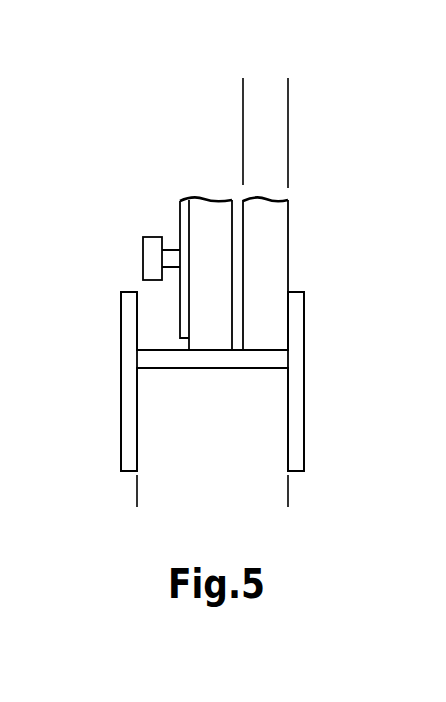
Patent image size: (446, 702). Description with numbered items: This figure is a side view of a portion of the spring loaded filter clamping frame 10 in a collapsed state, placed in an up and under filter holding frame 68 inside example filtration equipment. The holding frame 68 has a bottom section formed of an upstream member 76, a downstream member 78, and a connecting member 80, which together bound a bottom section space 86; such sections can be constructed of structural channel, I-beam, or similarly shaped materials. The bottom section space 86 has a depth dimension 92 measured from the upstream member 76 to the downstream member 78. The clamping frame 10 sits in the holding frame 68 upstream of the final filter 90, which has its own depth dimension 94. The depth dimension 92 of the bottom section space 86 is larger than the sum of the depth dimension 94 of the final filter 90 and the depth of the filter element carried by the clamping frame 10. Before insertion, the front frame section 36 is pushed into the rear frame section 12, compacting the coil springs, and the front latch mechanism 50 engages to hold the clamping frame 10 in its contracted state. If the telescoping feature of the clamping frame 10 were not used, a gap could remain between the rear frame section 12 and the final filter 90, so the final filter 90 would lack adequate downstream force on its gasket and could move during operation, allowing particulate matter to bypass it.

The spring loaded filter clamping frame 10 is at (189, 124).
The rear frame section 12 is at (228, 198).
The front frame section 36 is at (182, 213).
The front latch mechanism 50 is at (174, 248).
The up and under filter holding frame 68 is at (128, 442).
The upstream member 76 is at (121, 325).
The downstream member 78 is at (305, 323).
The connecting member 80 is at (252, 368).
The bottom section space 86 is at (157, 338).
The final filter 90 is at (267, 200).
The depth dimension 92 is at (288, 498).
The depth dimension 94 is at (208, 95).